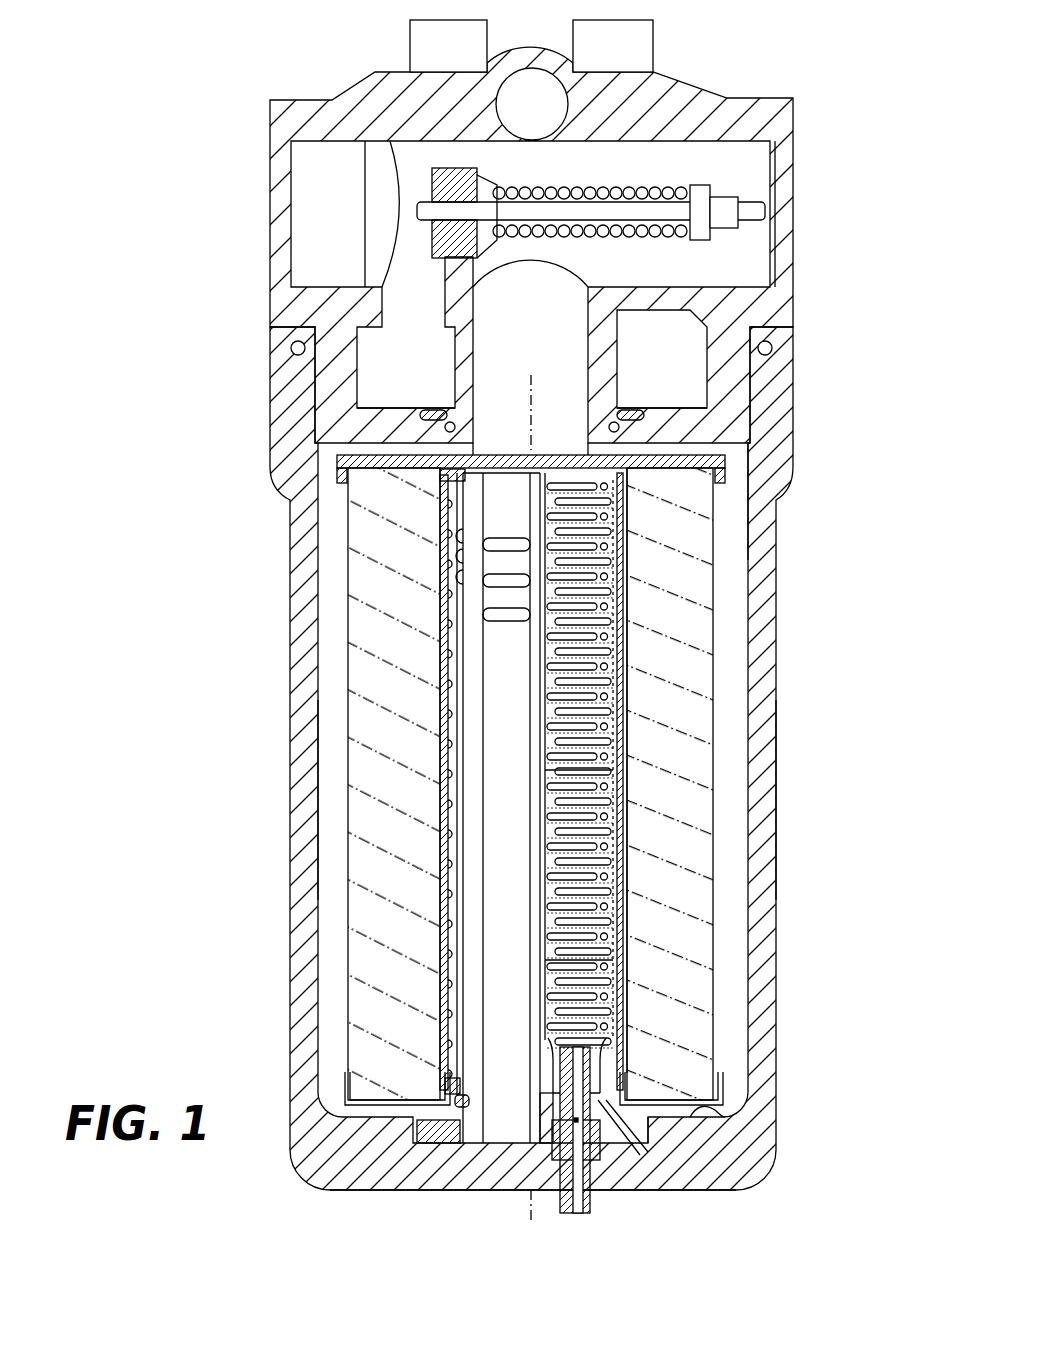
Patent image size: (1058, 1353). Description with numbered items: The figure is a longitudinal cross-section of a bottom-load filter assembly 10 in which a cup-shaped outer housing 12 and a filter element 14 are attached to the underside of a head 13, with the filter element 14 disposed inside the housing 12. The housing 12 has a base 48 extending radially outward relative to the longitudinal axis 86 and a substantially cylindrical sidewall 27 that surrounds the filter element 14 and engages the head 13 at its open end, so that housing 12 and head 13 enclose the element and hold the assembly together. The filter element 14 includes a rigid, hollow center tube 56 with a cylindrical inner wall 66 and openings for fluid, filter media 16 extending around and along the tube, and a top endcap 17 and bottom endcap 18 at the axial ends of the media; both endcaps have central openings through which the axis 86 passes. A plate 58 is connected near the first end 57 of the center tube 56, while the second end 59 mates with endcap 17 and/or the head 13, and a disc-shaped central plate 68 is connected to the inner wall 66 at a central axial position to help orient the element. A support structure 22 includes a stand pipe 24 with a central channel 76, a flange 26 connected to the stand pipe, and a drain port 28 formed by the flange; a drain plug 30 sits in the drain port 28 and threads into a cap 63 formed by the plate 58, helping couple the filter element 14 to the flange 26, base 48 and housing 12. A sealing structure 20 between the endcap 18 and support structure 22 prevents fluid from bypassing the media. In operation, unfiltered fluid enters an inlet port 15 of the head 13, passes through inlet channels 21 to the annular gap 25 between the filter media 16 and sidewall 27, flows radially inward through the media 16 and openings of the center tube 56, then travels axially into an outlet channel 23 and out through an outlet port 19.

The filter assembly 10 is at (193, 300).
The outer housing 12 is at (292, 600).
The head 13 is at (270, 108).
The filter element 14 is at (730, 527).
The inlet port 15 is at (263, 232).
The filter media 16 is at (409, 844).
The endcap 17 is at (337, 462).
The endcap 18 is at (345, 1075).
The outlet port 19 is at (810, 188).
The sealing structure 20 is at (462, 1107).
The inlet channel 21 is at (418, 366).
The support structure 22 is at (442, 1148).
The outlet channel 23 is at (546, 366).
The stand pipe 24 is at (470, 655).
The annular gap 25 is at (339, 797).
The flange 26 is at (410, 1135).
The sidewall 27 is at (762, 798).
The drain port 28 is at (620, 1143).
The drain plug 30 is at (590, 1200).
The base 48 is at (693, 1115).
The center tube 56 is at (627, 820).
The first end 57 is at (432, 1083).
The plate 58 is at (460, 1090).
The second end 59 is at (435, 486).
The cap 63 is at (580, 1033).
The inner wall 66 is at (627, 683).
The central plate 68 is at (627, 753).
The central channel 76 is at (517, 1017).
The longitudinal axis 86 is at (531, 1205).